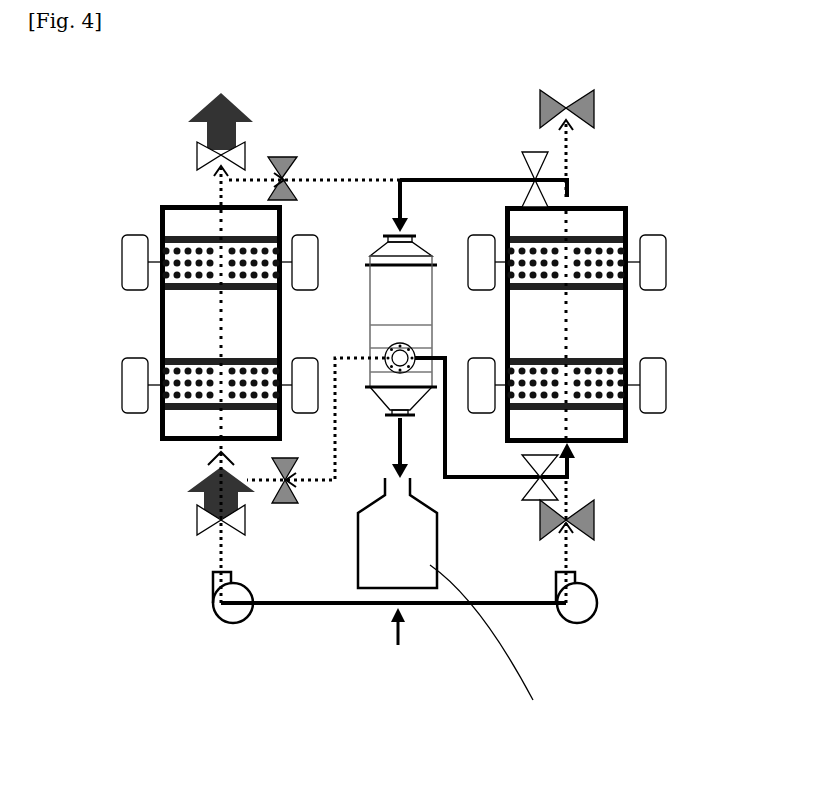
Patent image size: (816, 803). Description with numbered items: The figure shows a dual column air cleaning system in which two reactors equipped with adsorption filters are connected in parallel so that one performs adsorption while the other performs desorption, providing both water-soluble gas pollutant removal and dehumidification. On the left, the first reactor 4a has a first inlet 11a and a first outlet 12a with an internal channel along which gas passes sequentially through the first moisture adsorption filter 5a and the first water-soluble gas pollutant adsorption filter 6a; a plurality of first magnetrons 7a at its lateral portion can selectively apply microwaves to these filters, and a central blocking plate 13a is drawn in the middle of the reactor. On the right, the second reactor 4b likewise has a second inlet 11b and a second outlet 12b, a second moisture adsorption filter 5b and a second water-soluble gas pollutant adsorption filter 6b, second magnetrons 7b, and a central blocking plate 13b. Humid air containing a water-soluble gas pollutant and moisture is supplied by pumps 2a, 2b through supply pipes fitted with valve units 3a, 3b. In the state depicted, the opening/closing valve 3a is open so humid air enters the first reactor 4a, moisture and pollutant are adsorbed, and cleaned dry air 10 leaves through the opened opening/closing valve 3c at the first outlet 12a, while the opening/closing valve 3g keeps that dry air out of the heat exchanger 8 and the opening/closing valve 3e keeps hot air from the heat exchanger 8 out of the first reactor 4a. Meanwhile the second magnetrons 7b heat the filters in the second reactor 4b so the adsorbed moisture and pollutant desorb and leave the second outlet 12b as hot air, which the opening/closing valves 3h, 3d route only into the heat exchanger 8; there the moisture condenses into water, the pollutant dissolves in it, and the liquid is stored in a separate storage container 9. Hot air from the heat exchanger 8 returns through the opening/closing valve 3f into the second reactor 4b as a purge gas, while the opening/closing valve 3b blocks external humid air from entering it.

The pump 2a is at (220, 597).
The pump 2b is at (589, 597).
The opening/closing valve 3a is at (208, 520).
The opening/closing valve 3b is at (580, 520).
The opening/closing valve 3c is at (208, 156).
The opening/closing valve 3d is at (579, 109).
The opening/closing valve 3e is at (316, 430).
The opening/closing valve 3f is at (495, 430).
The opening/closing valve 3g is at (294, 183).
The opening/closing valve 3h is at (534, 169).
The first reactor 4a is at (152, 323).
The second reactor 4b is at (630, 325).
The first moisture adsorption filter 5a is at (168, 400).
The second moisture adsorption filter 5b is at (608, 383).
The first water-soluble gas pollutant adsorption filter 6a is at (170, 245).
The second water-soluble gas pollutant adsorption filter 6b is at (605, 250).
The first magnetrons 7a is at (125, 385).
The second magnetrons 7b is at (656, 385).
The heat exchanger 8 is at (372, 300).
The storage container 9 is at (360, 555).
The cleaned dry air 10 is at (233, 111).
The first inlet 11a is at (207, 523).
The second inlet 11b is at (592, 525).
The first outlet 12a is at (290, 185).
The second outlet 12b is at (503, 158).
The central perforated pipe 13a is at (218, 325).
The central perforated pipe 13b is at (567, 326).